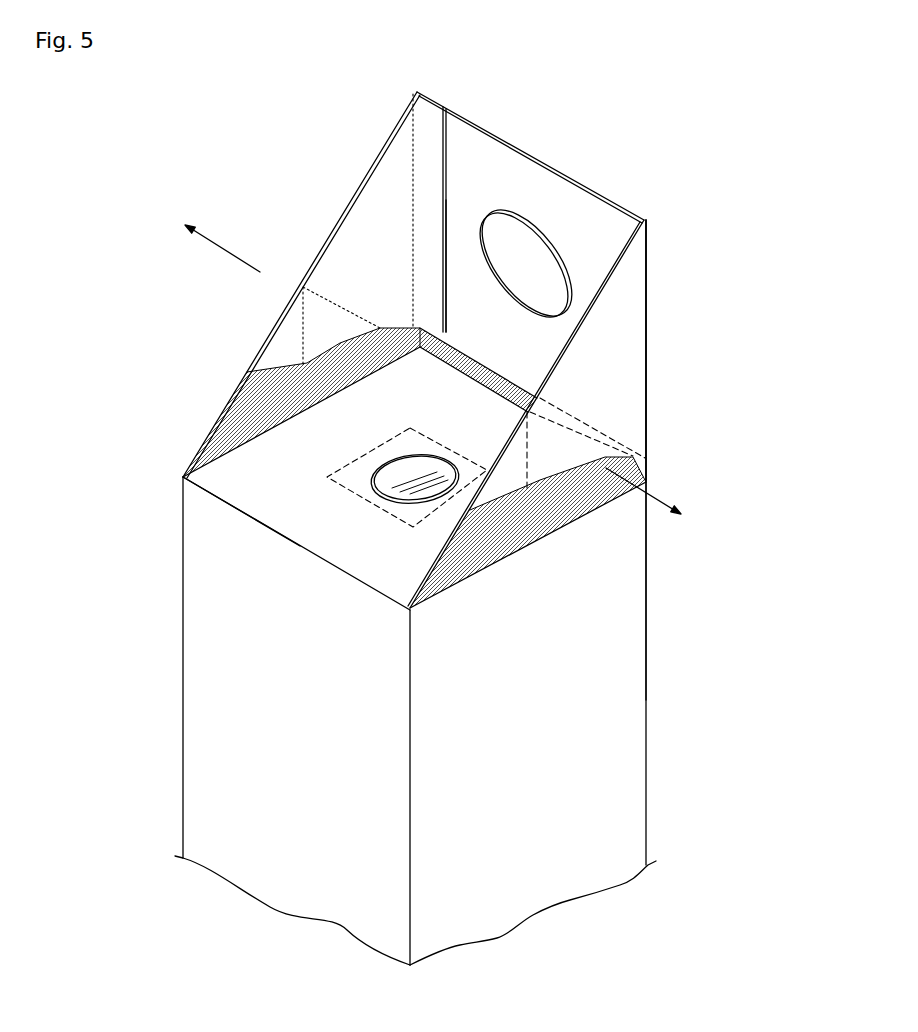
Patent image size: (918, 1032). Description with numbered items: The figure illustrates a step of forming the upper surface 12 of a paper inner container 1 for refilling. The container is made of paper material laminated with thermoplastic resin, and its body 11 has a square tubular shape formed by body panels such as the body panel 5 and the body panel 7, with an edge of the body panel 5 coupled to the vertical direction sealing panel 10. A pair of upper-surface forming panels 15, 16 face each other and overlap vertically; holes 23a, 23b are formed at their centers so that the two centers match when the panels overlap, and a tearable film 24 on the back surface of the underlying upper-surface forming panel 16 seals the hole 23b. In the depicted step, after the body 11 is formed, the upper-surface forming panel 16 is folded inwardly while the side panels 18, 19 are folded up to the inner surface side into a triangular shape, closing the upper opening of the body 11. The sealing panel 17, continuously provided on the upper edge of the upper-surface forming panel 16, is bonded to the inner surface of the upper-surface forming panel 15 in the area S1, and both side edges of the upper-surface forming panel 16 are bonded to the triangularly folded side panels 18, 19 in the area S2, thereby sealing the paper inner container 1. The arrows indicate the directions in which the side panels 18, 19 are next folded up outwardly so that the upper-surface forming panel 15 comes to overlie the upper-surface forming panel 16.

The paper inner container 1 is at (428, 529).
The body panel 5 is at (630, 563).
The body panel 7 is at (183, 610).
The vertical direction sealing panel 10 is at (473, 348).
The body 11 is at (655, 725).
The upper surface 12 is at (654, 315).
The upper-surface forming panel 15 is at (526, 348).
The upper-surface forming panel 16 is at (237, 468).
The sealing panel 17 is at (490, 367).
The side panel 18 is at (632, 395).
The side panel 19 is at (363, 210).
The hole 23a is at (503, 216).
The hole 23b is at (403, 465).
The film 24 is at (330, 478).
The bonding area S1 is at (456, 352).
The bonding area S2 is at (275, 386).